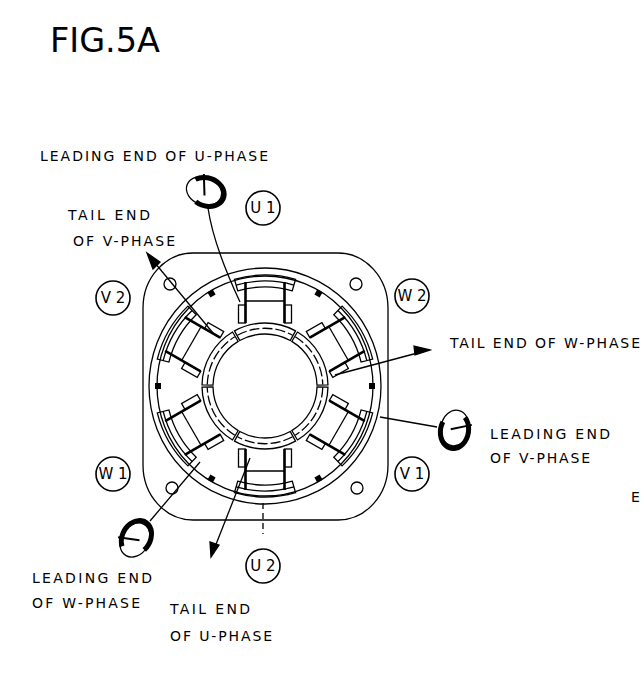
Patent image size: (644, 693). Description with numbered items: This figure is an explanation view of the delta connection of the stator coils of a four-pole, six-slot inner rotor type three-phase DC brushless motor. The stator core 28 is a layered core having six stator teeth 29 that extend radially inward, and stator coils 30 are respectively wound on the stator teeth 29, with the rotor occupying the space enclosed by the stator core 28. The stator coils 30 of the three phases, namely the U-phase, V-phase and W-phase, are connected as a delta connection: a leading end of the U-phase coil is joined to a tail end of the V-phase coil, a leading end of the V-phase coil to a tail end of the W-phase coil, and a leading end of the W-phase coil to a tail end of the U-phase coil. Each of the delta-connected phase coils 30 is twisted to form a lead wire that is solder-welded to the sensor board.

The stator core 28 is at (332, 297).
The stator teeth 29 is at (280, 300).
The stator coils 30 is at (245, 322).